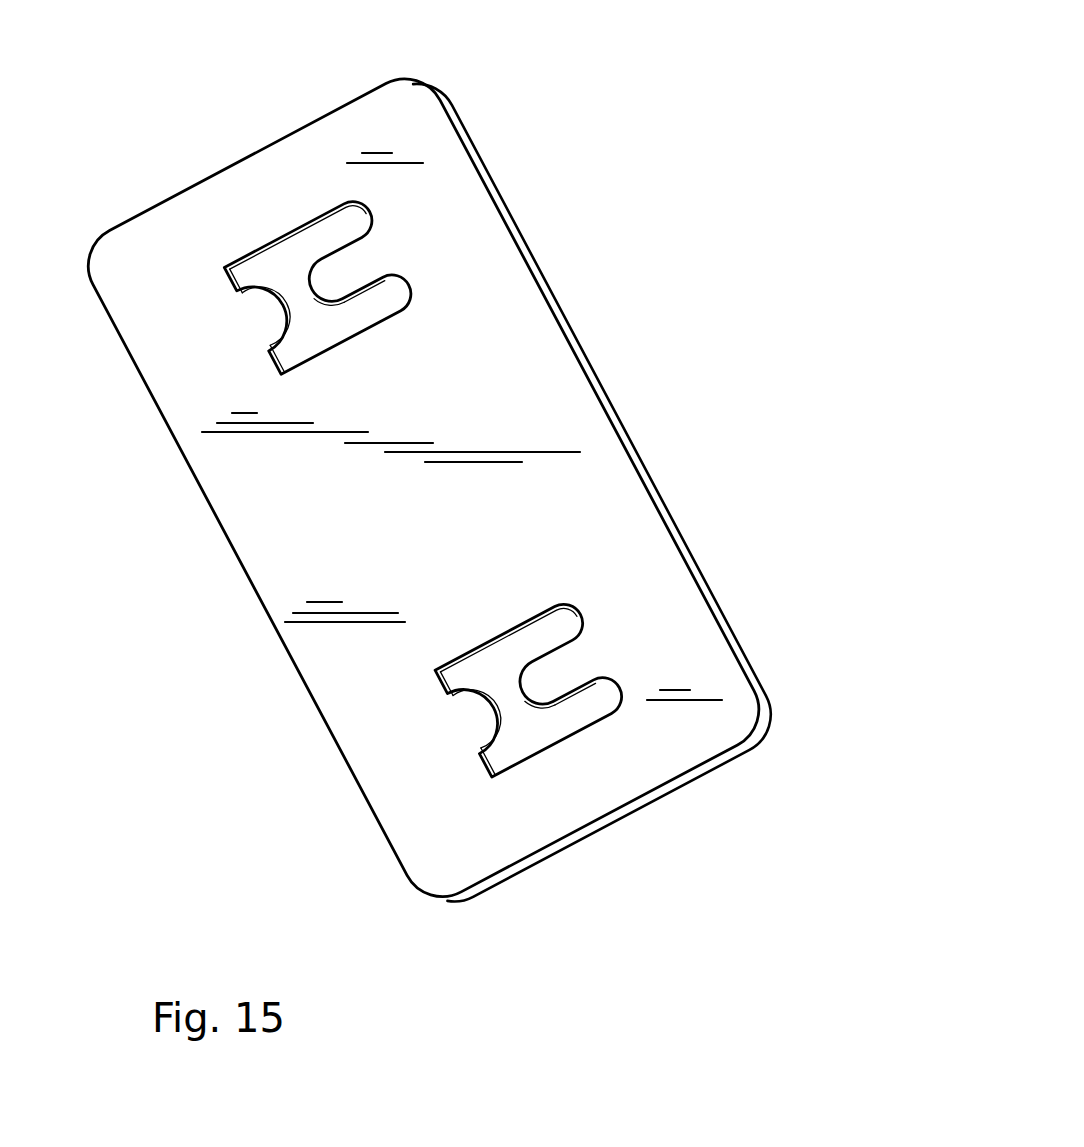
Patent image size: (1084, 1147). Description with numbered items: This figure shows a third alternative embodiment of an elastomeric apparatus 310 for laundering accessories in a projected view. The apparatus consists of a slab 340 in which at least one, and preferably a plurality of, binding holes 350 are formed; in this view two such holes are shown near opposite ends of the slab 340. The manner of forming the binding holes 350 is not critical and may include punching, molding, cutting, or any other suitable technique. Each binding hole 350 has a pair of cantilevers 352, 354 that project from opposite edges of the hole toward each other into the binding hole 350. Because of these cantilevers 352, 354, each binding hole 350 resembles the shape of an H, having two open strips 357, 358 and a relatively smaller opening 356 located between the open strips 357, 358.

The elastomeric apparatus 310 is at (661, 52).
The slab 340 is at (417, 536).
The binding hole 350 is at (260, 242).
The cantilever 352 is at (298, 290).
The cantilever 354 is at (262, 315).
The opening 356 is at (350, 273).
The open strip 357 is at (353, 223).
The open strip 358 is at (385, 310).